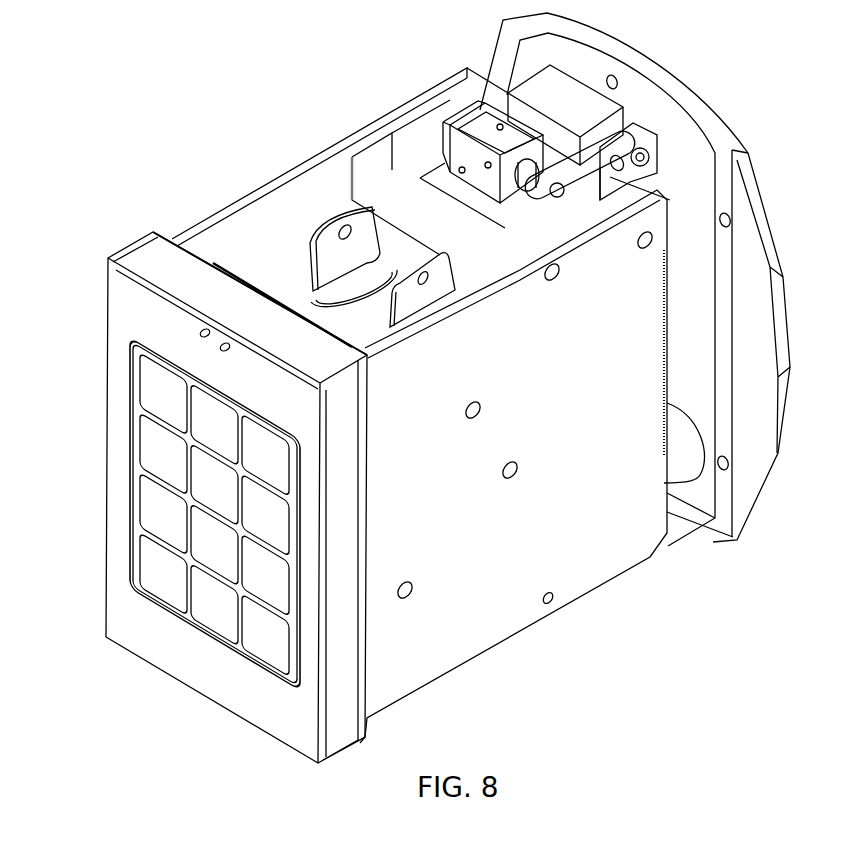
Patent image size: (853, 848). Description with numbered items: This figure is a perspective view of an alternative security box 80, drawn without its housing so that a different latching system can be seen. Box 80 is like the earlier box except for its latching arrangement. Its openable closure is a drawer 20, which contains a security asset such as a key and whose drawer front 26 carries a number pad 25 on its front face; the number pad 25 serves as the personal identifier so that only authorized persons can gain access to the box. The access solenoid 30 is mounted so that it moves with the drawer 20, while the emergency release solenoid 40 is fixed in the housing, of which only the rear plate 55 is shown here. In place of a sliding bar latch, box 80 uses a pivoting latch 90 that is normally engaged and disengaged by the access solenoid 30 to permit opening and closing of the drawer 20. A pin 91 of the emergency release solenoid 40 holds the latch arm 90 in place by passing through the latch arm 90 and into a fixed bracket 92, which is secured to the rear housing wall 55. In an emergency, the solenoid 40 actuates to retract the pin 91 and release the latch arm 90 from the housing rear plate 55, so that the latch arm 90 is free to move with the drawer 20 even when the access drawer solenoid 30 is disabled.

The alternative box 80 is at (214, 76).
The drawer 20 is at (500, 627).
The number pad 25 is at (137, 485).
The drawer front 26 is at (205, 677).
The access solenoid 30 is at (482, 128).
The emergency release solenoid 40 is at (577, 93).
The rear plate 55 is at (752, 313).
The pivoting latch 90 is at (572, 164).
The pin 91 is at (620, 167).
The fixed bracket 92 is at (627, 133).